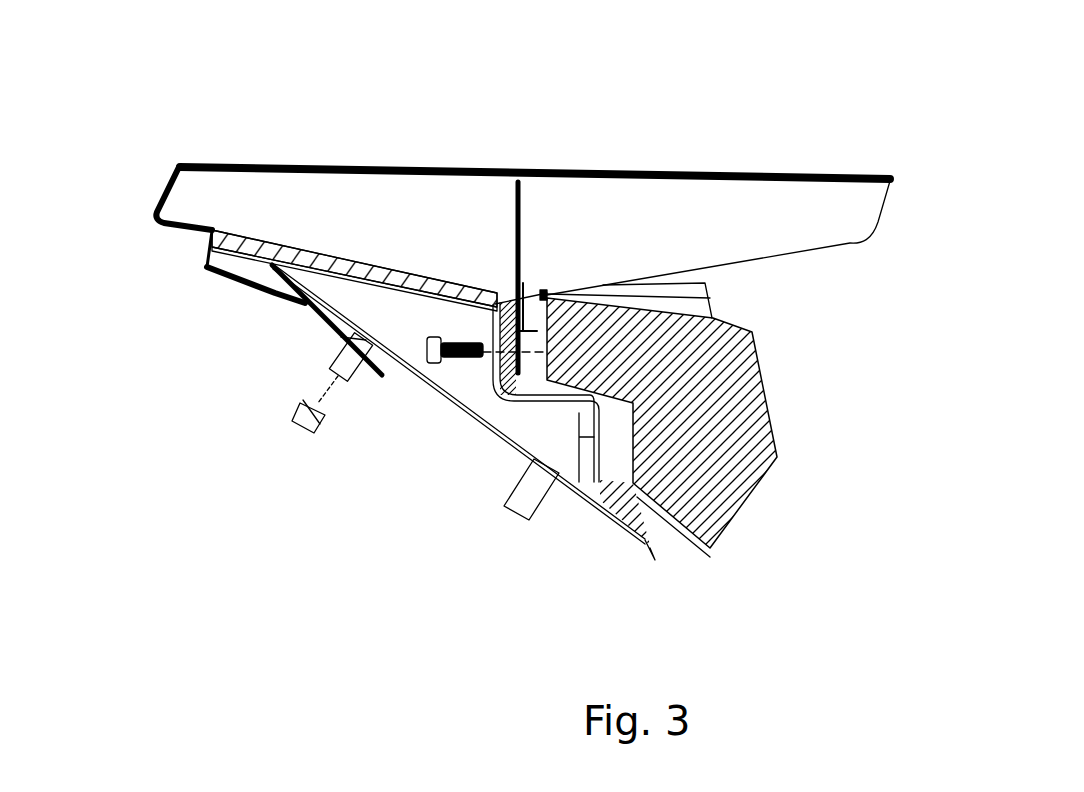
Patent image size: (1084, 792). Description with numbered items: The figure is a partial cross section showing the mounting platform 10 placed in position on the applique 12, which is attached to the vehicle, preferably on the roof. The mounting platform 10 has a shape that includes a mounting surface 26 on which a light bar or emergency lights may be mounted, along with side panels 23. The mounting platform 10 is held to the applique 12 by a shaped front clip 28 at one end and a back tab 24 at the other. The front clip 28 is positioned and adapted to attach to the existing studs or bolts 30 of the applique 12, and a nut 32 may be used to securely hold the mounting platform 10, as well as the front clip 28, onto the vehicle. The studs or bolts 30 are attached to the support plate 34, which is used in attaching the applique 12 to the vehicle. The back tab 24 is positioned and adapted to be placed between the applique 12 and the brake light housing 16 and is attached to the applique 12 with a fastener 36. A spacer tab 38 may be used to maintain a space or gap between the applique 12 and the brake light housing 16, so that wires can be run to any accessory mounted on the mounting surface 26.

The mounting platform 10 is at (720, 168).
The applique 12 is at (203, 265).
The brake light housing 16 is at (760, 342).
The side panels 23 is at (843, 228).
The back tabs 24 is at (520, 368).
The mounting surface 26 is at (352, 165).
The front clip 28 is at (270, 293).
The studs or bolts 30 is at (335, 354).
The nut 32 is at (300, 432).
The support plate 34 is at (423, 360).
The fastener 36 is at (467, 357).
The spacer tab 38 is at (534, 331).